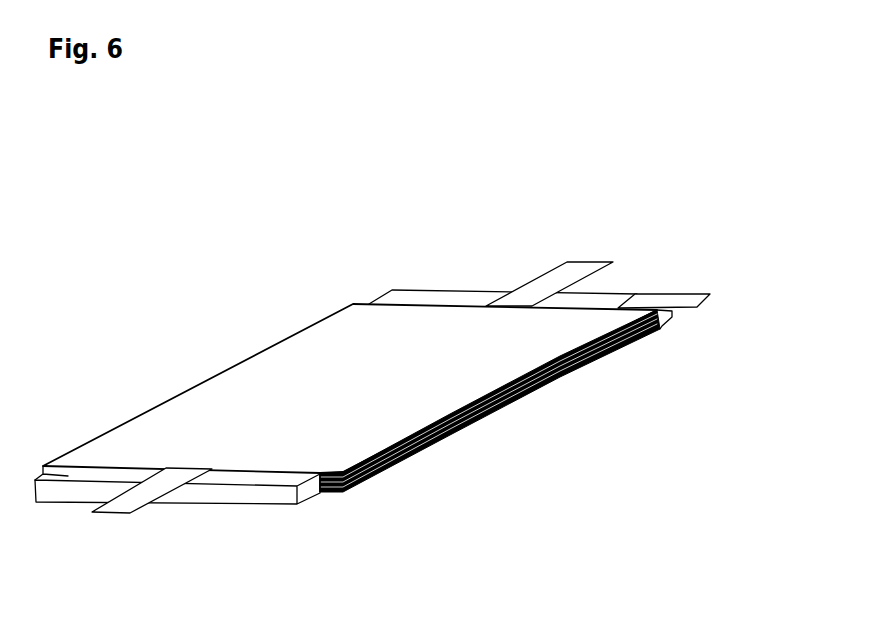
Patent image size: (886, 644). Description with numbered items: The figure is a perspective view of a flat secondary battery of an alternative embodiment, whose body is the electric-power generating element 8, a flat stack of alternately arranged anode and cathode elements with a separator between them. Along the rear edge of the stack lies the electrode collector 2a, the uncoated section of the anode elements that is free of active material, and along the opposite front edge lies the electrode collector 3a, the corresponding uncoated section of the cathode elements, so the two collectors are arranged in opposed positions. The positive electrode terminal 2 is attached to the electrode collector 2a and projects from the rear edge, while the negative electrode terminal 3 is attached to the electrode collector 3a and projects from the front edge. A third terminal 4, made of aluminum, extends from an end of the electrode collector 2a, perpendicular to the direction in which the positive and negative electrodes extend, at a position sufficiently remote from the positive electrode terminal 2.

The electric-power generating element 8 is at (313, 370).
The positive electrode terminal 2 is at (585, 262).
The electrode collector 2a is at (425, 297).
The negative electrode terminal 3 is at (160, 497).
The electrode collector 3a is at (257, 483).
The third terminal 4 is at (693, 297).